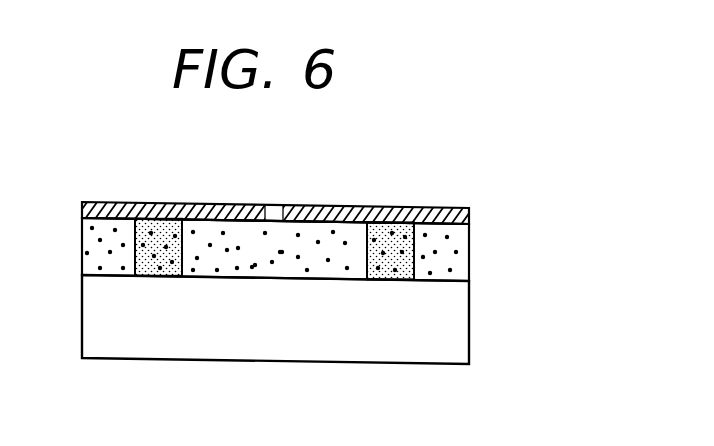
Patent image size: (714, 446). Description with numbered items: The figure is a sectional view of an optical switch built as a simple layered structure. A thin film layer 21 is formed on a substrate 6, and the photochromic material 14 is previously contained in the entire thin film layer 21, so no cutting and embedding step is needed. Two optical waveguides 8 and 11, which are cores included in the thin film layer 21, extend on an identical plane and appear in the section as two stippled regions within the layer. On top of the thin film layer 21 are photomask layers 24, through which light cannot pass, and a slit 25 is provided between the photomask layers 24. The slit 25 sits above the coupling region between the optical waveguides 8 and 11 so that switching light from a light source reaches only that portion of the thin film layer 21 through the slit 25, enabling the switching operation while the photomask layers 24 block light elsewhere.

The substrate 6 is at (455, 332).
The optical waveguide 8 is at (158, 270).
The optical waveguide 11 is at (392, 283).
The photochromic material 14 is at (457, 251).
The thin film layer 21 is at (460, 268).
The photomask layers 24 is at (211, 207).
The slit 25 is at (274, 205).